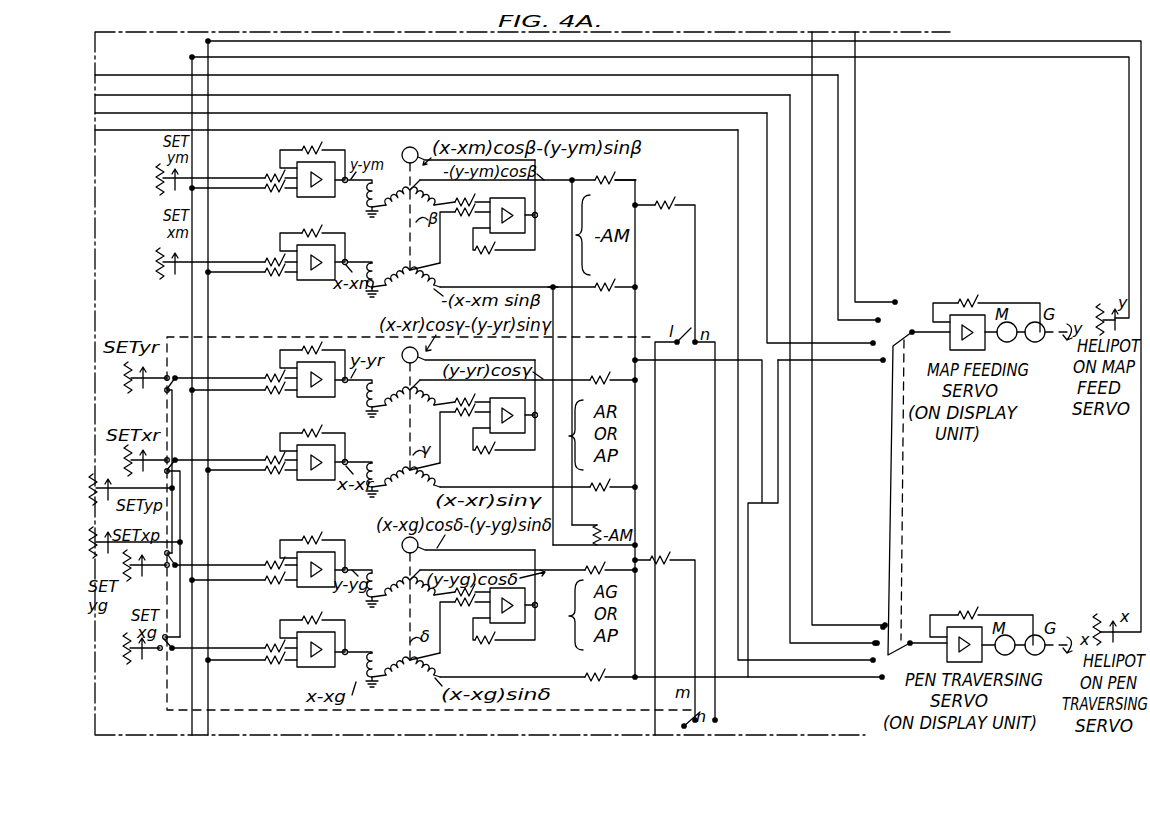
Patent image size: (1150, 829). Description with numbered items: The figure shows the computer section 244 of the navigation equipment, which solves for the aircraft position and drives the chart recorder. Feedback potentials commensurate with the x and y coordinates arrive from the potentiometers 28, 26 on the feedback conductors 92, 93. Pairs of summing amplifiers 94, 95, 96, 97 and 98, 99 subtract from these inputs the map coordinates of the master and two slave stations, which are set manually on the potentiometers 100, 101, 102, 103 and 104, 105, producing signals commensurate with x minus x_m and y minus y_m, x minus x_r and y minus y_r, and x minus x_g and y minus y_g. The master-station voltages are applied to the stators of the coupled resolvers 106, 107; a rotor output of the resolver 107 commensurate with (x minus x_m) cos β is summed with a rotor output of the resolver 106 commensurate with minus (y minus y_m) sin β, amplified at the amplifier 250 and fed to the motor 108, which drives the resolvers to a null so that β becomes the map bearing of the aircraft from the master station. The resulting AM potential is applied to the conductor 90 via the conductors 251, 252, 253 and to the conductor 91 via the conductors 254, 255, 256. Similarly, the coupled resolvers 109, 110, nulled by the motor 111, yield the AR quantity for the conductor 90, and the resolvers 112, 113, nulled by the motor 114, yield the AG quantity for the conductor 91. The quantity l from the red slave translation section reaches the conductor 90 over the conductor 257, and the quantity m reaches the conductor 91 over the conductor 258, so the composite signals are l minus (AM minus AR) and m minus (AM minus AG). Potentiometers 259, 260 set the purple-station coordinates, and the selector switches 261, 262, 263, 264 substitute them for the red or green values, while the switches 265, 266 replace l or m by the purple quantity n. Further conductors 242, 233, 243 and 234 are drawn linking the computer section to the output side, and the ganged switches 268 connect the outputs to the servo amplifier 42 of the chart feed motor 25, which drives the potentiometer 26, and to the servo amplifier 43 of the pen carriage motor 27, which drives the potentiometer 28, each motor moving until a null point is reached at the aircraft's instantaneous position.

The feedback conductor 92 is at (210, 144).
The feedback conductor 93 is at (194, 214).
The potentiometer 101 is at (157, 177).
The potentiometer 100 is at (157, 262).
The amplifier 95 is at (320, 192).
The amplifier 94 is at (320, 281).
The motor 108 is at (403, 151).
The resolver 106 is at (407, 204).
The resolver 107 is at (413, 268).
The amplifier 250 is at (527, 207).
The conductor 251 is at (637, 185).
The conductor 252 is at (636, 285).
The conductor 253 is at (638, 292).
The conductor 254 is at (560, 278).
The conductor 255 is at (557, 316).
The conductor to map feeding servo 242 is at (766, 196).
The conductor to map feeding servo 233 is at (839, 252).
The potentiometer 103 is at (126, 382).
The potentiometer 102 is at (125, 452).
The potentiometer 260 is at (93, 495).
The potentiometer 259 is at (94, 548).
The selector switch 262 is at (178, 381).
The selector switch 261 is at (176, 466).
The selector switch 264 is at (177, 560).
The selector switch 263 is at (175, 645).
The potentiometer 105 is at (134, 550).
The potentiometer 104 is at (124, 648).
The amplifier 97 is at (321, 391).
The amplifier 96 is at (321, 484).
The amplifier 99 is at (318, 589).
The amplifier 98 is at (320, 668).
The motor 111 is at (403, 349).
The resolver 109 is at (417, 400).
The resolver 110 is at (408, 466).
The computer section 244 is at (426, 509).
The motor 114 is at (402, 543).
The resolver 112 is at (413, 590).
The resolver 113 is at (407, 656).
The switch 265 is at (687, 354).
The conductor to pen traversing servo 243 is at (737, 413).
The conductor 257 is at (657, 457).
The conductor 256 is at (637, 608).
The conductor 258 is at (714, 644).
The switch 266 is at (701, 712).
The conductor to pen traversing servo 234 is at (791, 543).
The conductor 91 is at (881, 362).
The conductor 90 is at (826, 678).
The ganged switches 268 is at (905, 492).
The servo amplifier 42 is at (959, 321).
The servo-motor 25 is at (1009, 322).
The potentiometer 26 is at (1099, 311).
The servo amplifier 43 is at (946, 650).
The servo-motor 27 is at (1007, 635).
The potentiometer 28 is at (1097, 620).